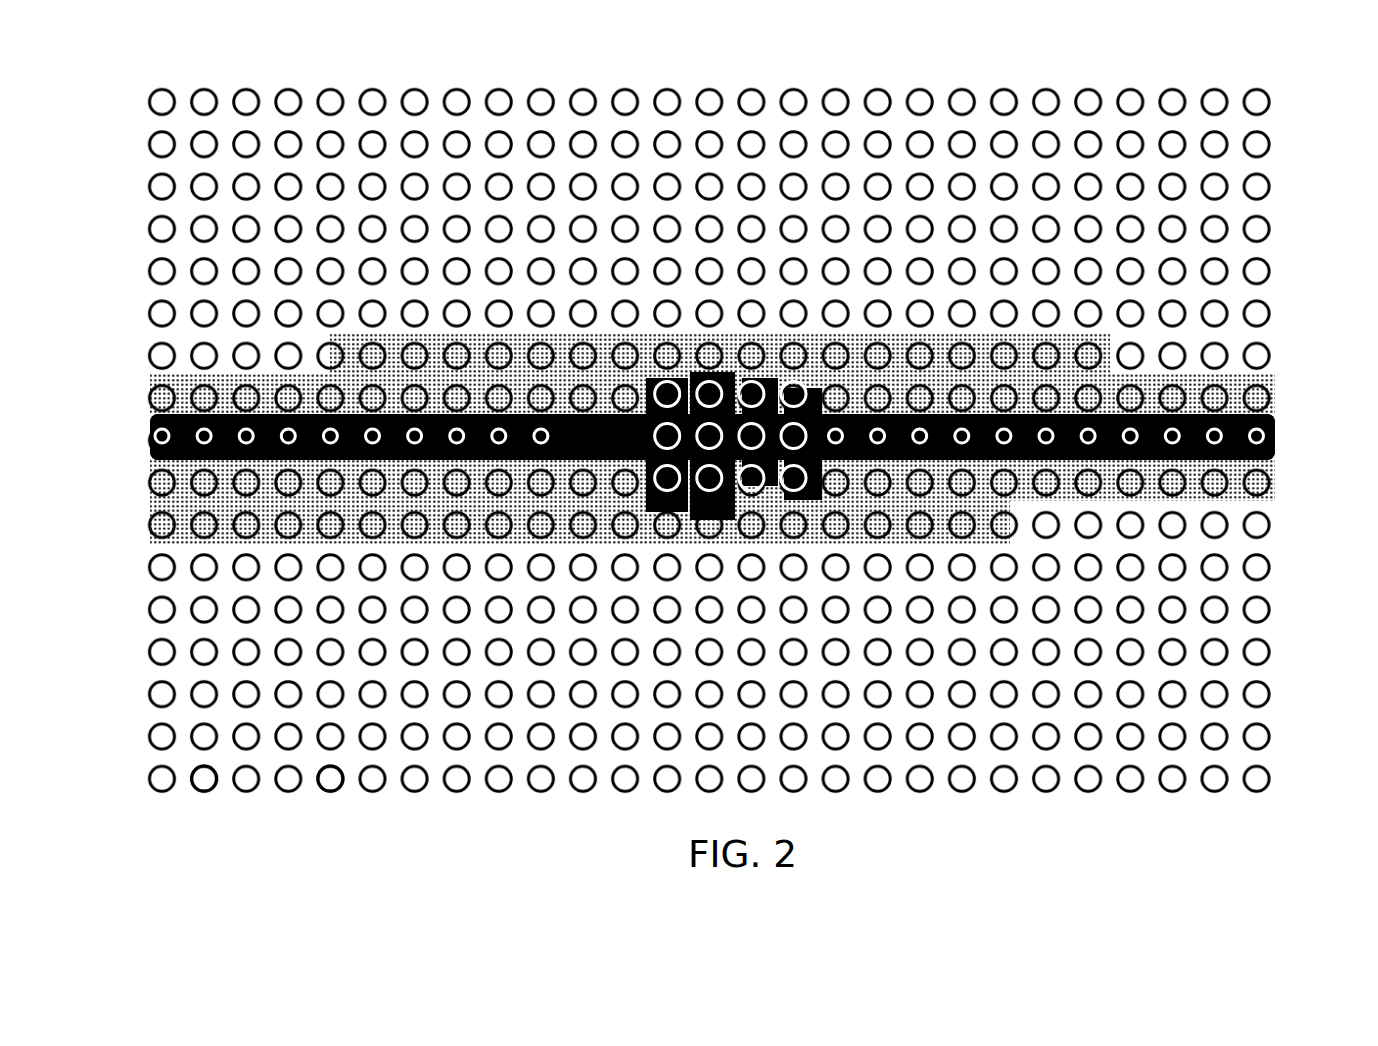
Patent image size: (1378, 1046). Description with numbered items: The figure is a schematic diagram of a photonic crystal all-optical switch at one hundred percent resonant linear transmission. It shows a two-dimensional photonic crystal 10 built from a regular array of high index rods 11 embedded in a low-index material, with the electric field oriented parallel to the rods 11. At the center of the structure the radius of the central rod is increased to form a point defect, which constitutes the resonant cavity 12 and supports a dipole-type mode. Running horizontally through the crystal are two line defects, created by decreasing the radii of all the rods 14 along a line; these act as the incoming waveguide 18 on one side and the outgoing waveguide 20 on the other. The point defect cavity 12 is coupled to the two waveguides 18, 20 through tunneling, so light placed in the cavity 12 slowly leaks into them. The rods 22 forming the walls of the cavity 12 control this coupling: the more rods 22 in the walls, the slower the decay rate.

The 2D photonic crystal 10 is at (156, 843).
The high index rods 11 is at (308, 805).
The resonant cavity 12 is at (726, 377).
The rods 14 is at (259, 470).
The incoming waveguide 18 is at (148, 424).
The outgoing waveguide 20 is at (1308, 433).
The rods in the walls of the cavity 22 is at (611, 374).